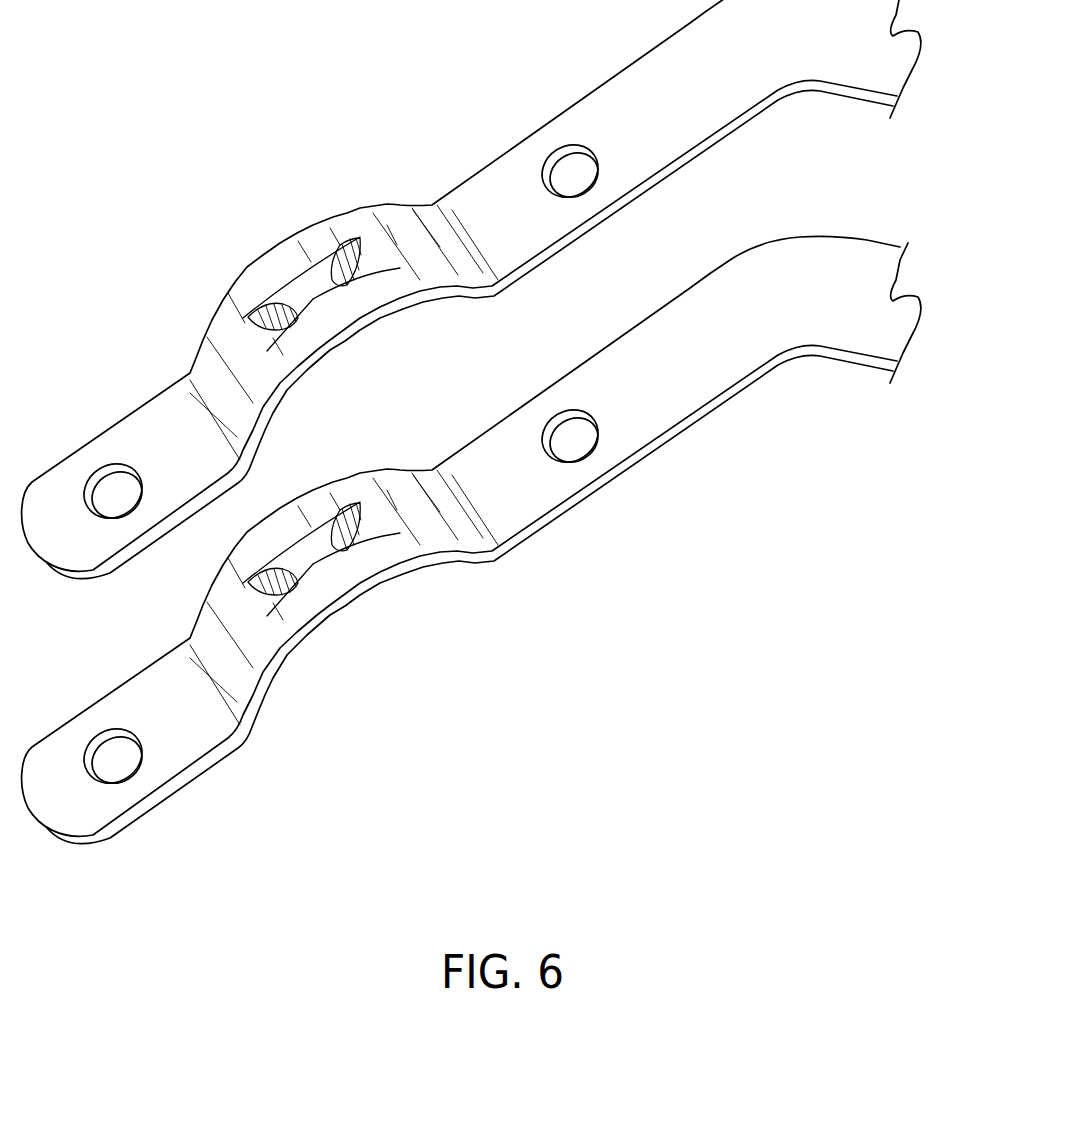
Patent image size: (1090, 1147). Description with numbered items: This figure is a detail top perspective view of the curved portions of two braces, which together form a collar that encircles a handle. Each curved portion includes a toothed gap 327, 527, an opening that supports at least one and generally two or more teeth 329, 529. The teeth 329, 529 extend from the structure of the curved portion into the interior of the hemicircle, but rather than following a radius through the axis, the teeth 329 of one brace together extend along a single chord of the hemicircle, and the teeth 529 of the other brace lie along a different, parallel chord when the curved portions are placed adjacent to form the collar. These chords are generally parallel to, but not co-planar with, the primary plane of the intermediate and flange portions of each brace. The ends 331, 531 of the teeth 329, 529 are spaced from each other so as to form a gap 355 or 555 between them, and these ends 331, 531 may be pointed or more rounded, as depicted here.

The toothed gap 327 is at (330, 296).
The teeth 329 is at (248, 317).
The ends 331 is at (297, 315).
The gap 355 is at (313, 300).
The toothed gap 527 is at (364, 588).
The teeth 529 is at (301, 553).
The ends 531 is at (304, 516).
The gap 555 is at (314, 619).